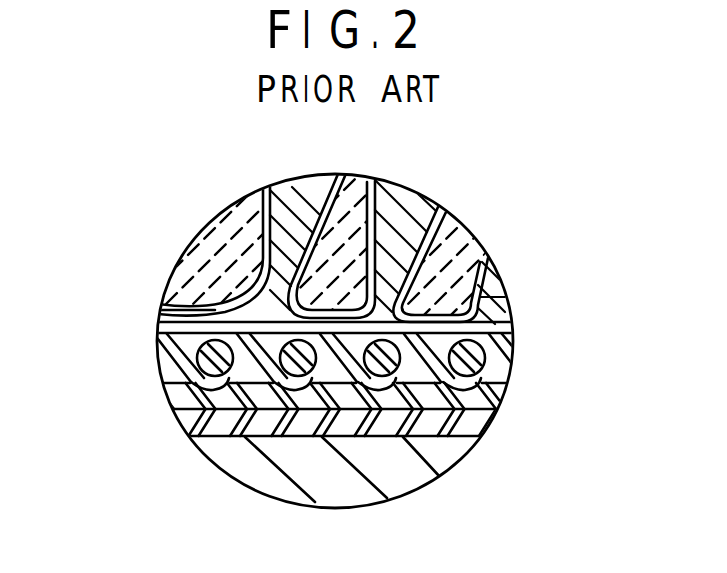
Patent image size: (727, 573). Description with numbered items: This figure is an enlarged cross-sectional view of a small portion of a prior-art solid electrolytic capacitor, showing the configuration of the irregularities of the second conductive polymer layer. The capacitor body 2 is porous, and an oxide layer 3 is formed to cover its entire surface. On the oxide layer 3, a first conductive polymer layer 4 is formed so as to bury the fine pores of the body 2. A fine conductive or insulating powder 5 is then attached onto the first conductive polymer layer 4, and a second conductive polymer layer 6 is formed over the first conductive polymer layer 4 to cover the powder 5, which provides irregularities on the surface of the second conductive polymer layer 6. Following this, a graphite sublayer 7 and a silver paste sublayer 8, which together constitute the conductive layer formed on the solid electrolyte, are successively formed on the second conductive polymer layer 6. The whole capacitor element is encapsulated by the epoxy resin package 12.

The capacitor body 2 is at (470, 235).
The oxide layer 3 is at (440, 207).
The first conductive polymer layer 4 is at (498, 278).
The fine conductive or insulating powder 5 is at (157, 350).
The second conductive polymer layer 6 is at (506, 351).
The graphite sublayer 7 is at (163, 387).
The silver paste sublayer 8 is at (180, 430).
The epoxy resin package 12 is at (445, 453).